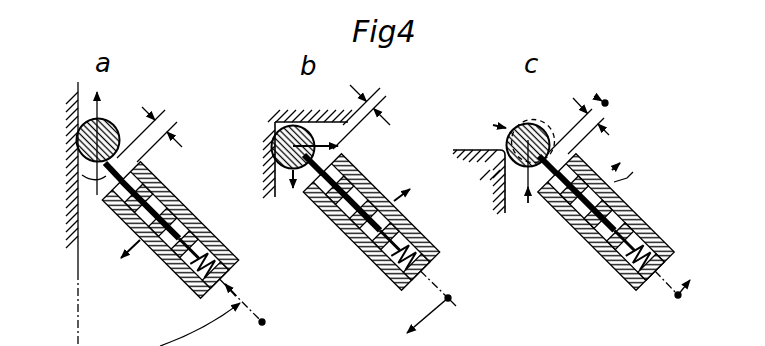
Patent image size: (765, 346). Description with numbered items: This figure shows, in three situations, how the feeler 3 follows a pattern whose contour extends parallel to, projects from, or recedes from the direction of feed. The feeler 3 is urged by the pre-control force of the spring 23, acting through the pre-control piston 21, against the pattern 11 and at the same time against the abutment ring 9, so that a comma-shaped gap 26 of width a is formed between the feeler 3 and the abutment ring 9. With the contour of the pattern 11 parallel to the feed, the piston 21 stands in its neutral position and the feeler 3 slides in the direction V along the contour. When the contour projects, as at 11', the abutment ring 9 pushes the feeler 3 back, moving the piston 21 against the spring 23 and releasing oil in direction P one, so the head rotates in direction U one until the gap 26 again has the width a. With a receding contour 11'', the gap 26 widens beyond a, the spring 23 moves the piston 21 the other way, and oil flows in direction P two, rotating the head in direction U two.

The feeler 3 is at (116, 130).
The abutment ring 9 is at (133, 149).
The pattern 11 is at (92, 233).
The projecting contour 11' is at (326, 141).
The receding contour 11'' is at (479, 173).
The pre-control piston 21 is at (167, 186).
The spring 23 is at (184, 284).
The gap 26 is at (72, 190).